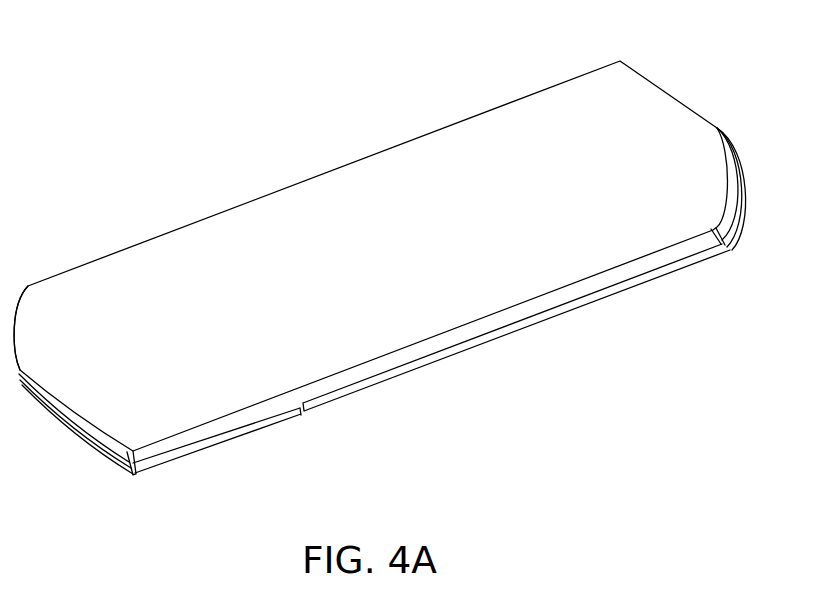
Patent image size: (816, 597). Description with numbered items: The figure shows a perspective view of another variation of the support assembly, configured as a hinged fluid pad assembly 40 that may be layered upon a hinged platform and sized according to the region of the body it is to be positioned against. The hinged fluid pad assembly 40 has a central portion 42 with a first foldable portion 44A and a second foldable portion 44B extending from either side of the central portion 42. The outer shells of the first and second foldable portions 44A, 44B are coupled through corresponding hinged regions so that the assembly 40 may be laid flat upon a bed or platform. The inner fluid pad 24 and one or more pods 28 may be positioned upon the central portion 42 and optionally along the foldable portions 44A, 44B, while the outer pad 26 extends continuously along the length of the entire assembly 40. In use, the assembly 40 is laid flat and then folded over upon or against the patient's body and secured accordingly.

The hinged fluid pad assembly 40 is at (380, 267).
The inner fluid pad 24 is at (223, 188).
The pod 28 is at (282, 158).
The outer pad 26 is at (75, 268).
The central portion 42 is at (431, 377).
The first foldable portion 44A is at (242, 440).
The second foldable portion 44B is at (637, 290).